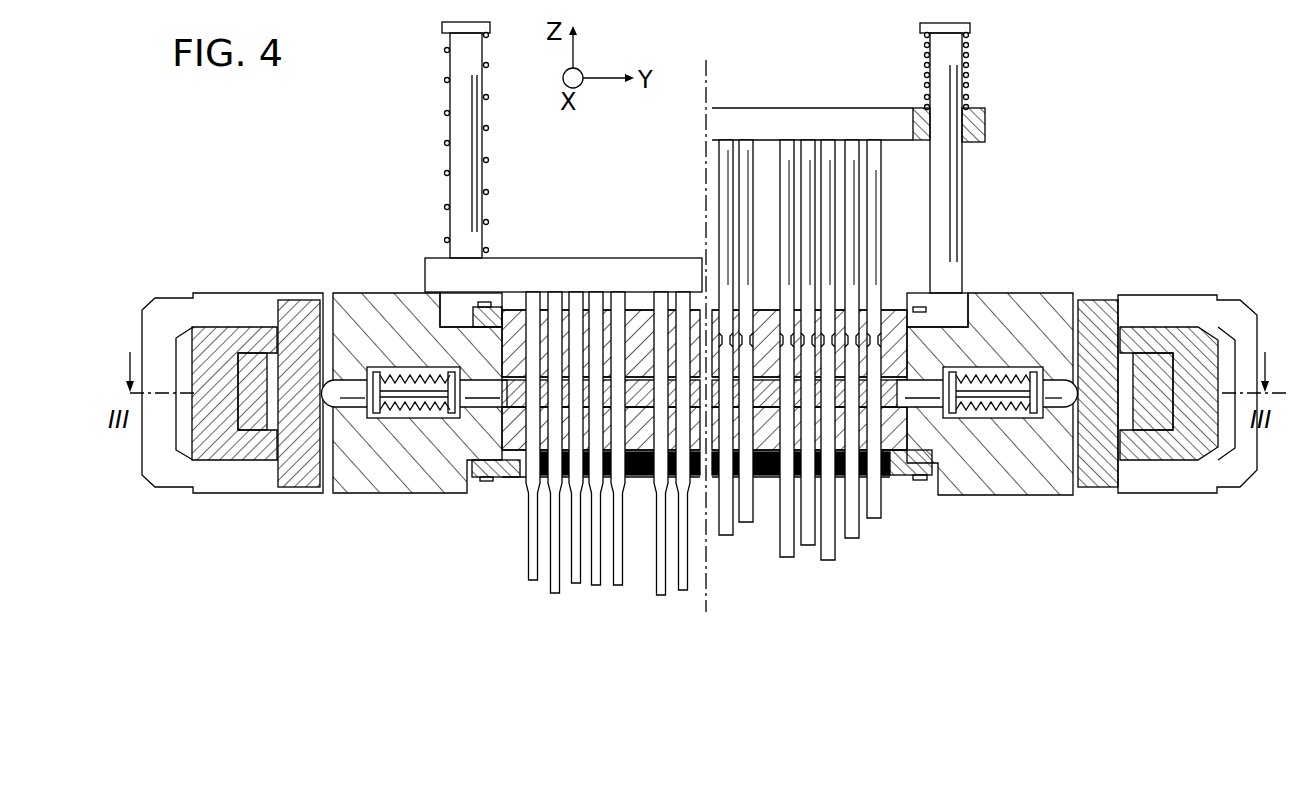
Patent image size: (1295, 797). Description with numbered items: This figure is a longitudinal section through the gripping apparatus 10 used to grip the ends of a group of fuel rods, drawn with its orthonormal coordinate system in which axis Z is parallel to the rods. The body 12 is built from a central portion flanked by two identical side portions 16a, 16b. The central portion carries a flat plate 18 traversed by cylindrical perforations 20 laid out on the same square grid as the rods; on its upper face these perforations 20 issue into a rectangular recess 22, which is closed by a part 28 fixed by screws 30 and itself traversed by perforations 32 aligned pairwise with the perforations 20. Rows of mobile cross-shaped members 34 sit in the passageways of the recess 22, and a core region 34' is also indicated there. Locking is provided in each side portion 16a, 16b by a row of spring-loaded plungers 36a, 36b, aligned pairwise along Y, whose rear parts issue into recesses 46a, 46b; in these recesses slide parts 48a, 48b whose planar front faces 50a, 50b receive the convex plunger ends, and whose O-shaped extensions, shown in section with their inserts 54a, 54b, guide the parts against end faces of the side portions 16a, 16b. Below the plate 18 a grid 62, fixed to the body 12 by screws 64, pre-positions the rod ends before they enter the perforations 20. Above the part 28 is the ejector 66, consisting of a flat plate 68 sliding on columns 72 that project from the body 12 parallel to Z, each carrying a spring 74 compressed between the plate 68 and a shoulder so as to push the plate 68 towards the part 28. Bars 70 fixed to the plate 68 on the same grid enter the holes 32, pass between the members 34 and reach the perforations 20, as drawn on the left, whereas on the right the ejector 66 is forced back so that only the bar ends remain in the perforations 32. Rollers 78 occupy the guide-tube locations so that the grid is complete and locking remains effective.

The gripping apparatus 10 is at (1025, 212).
The body 12 is at (1033, 300).
The side portion 16a is at (1058, 312).
The side portion 16b is at (353, 300).
The flat plate 18 is at (510, 480).
The cylindrical perforations 20 is at (881, 480).
The rectangular recess 22 is at (505, 300).
The part 28 is at (640, 320).
The screws 30 is at (930, 312).
The cylindrical perforations 32 is at (583, 298).
The mobile cross-shaped members 34 is at (809, 431).
The contact carrier core 34' is at (657, 354).
The plungers 36a is at (918, 380).
The plungers 36b is at (482, 380).
The recess 46a is at (1143, 463).
The recess 46b is at (325, 493).
The part 48a is at (1107, 327).
The part 48b is at (275, 493).
The planar front face 50a is at (1100, 483).
The planar front face 50b is at (250, 367).
The clamp insert 54a is at (1160, 430).
The clamp insert 54b is at (203, 362).
The grid 62 is at (498, 480).
The screws 64 is at (920, 481).
The ejector 66 is at (440, 270).
The flat plate 68 is at (747, 120).
The bars 70 is at (733, 288).
The columns 72 is at (450, 190).
The spring 74 is at (488, 98).
The rollers 78 is at (655, 450).